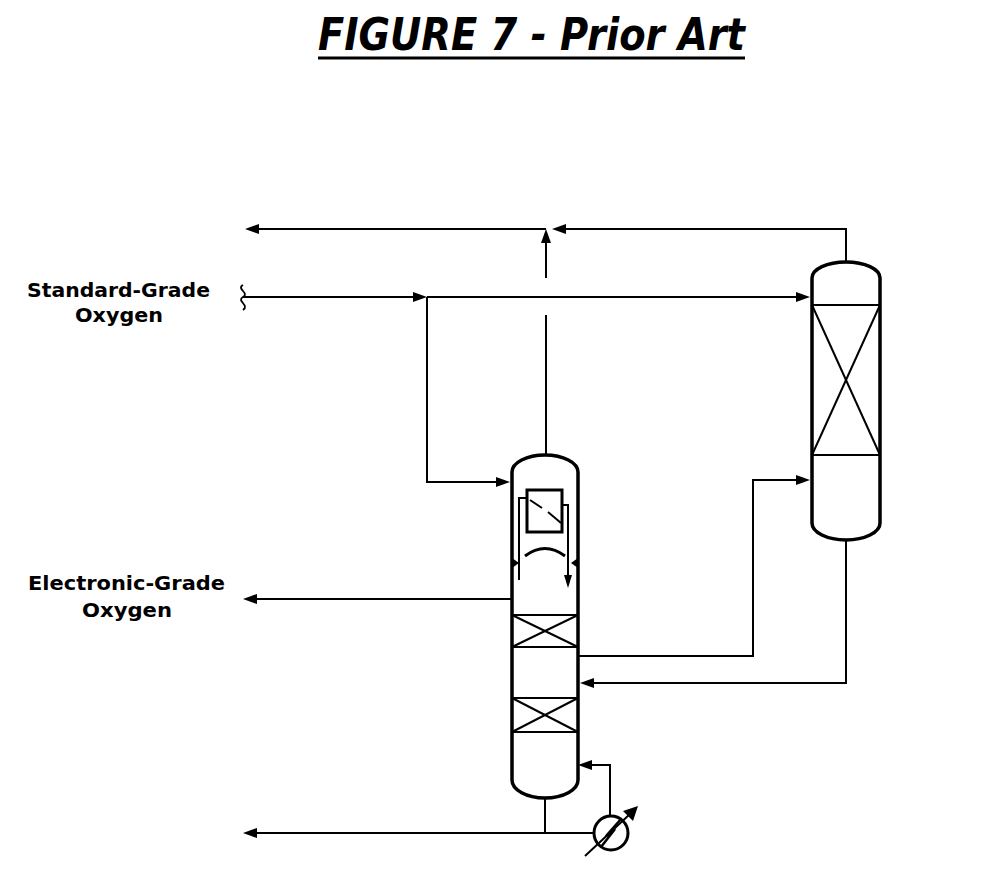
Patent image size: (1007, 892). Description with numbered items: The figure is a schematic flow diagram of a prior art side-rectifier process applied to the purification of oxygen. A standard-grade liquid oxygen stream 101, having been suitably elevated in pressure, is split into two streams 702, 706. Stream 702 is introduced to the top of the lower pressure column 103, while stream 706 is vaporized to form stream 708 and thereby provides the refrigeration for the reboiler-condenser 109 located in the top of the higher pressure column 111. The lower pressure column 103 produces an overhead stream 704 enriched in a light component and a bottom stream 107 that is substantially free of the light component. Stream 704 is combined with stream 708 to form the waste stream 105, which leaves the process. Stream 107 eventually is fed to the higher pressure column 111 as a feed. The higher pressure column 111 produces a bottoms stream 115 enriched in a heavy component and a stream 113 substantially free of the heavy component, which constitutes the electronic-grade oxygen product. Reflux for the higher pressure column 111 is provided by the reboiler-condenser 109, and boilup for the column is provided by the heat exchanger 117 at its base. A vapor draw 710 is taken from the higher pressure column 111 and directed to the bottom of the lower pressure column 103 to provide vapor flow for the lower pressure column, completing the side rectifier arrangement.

The standard-grade liquid oxygen stream 101 is at (366, 299).
The lower pressure column 103 is at (880, 370).
The waste stream 105 is at (381, 228).
The stream substantially free of the light component 107 is at (846, 628).
The reboiler-condenser 109 is at (565, 508).
The higher pressure column 111 is at (512, 673).
The electronic-grade oxygen product stream 113 is at (322, 600).
The stream enriched in a heavy component 115 is at (372, 834).
The heat exchanger 117 is at (628, 838).
The stream introduced to the lower pressure column 702 is at (650, 299).
The stream enriched in a light component 704 is at (693, 229).
The stream vaporized in the reboiler-condenser 706 is at (427, 438).
The vaporized stream 708 is at (546, 386).
The vapor draw 710 is at (753, 602).